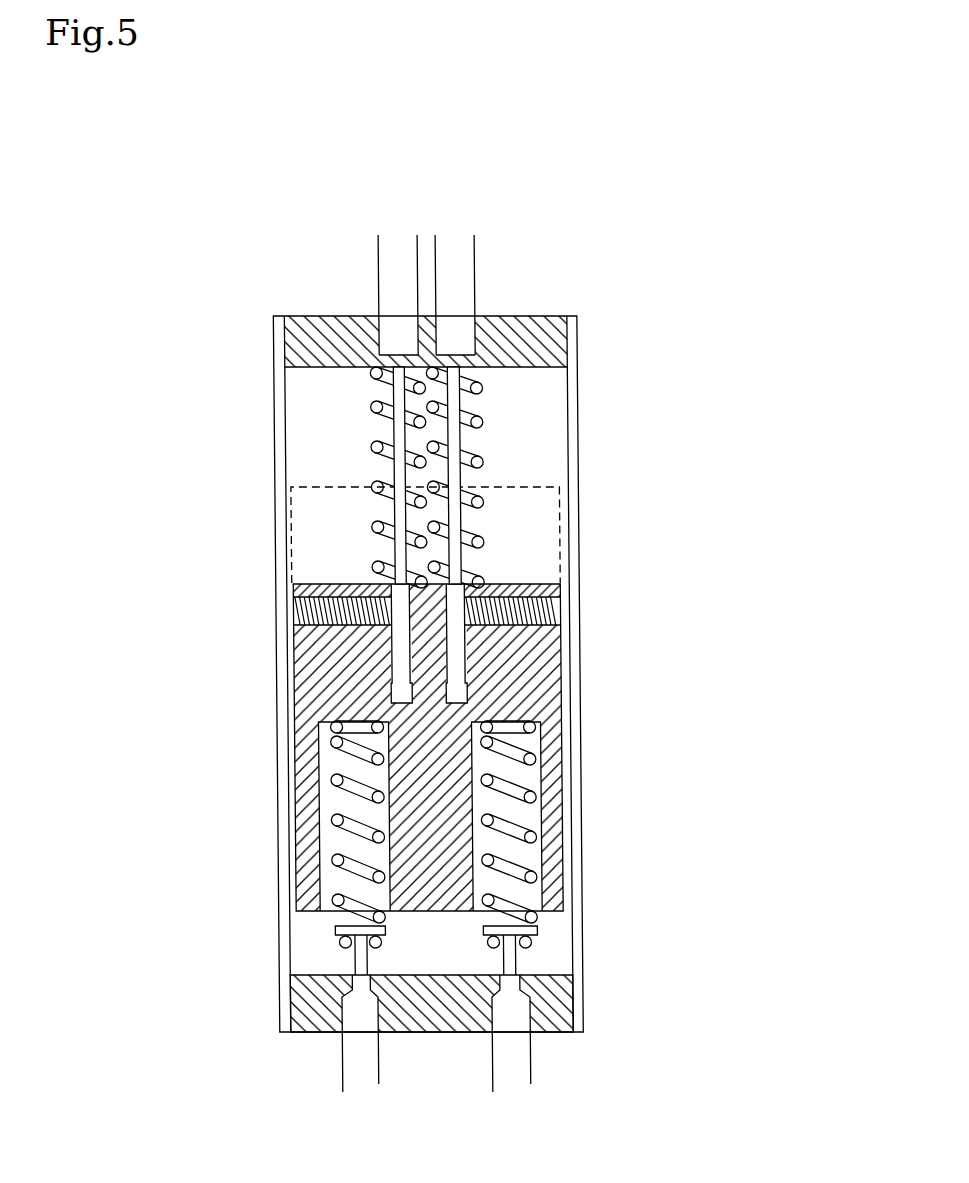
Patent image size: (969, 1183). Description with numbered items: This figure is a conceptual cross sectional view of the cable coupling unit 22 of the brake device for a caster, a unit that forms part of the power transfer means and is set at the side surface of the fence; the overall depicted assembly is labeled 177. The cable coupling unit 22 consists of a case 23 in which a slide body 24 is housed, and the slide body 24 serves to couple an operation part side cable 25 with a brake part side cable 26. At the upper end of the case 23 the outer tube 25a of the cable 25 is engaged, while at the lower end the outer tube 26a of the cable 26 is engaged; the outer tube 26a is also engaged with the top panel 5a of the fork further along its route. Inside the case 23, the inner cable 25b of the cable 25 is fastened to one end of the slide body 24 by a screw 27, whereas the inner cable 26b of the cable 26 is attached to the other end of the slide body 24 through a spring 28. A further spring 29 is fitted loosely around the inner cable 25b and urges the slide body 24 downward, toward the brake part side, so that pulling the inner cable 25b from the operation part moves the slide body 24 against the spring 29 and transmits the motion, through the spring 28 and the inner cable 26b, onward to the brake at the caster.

The damper device 177 is at (396, 638).
The cable coupling unit 22 is at (501, 674).
The case 23 is at (360, 674).
The top panel 5a is at (399, 297).
The operation part side cable 25 is at (383, 263).
The outer tube 25a is at (494, 288).
The inner cable 25b is at (445, 475).
The slide body 24 is at (486, 699).
The screw 27 is at (426, 608).
The spring 29 is at (433, 477).
The spring 28 is at (424, 822).
The inner cable 26b is at (426, 935).
The outer tube 26a is at (437, 1010).
The brake part side cable 26 is at (436, 1081).